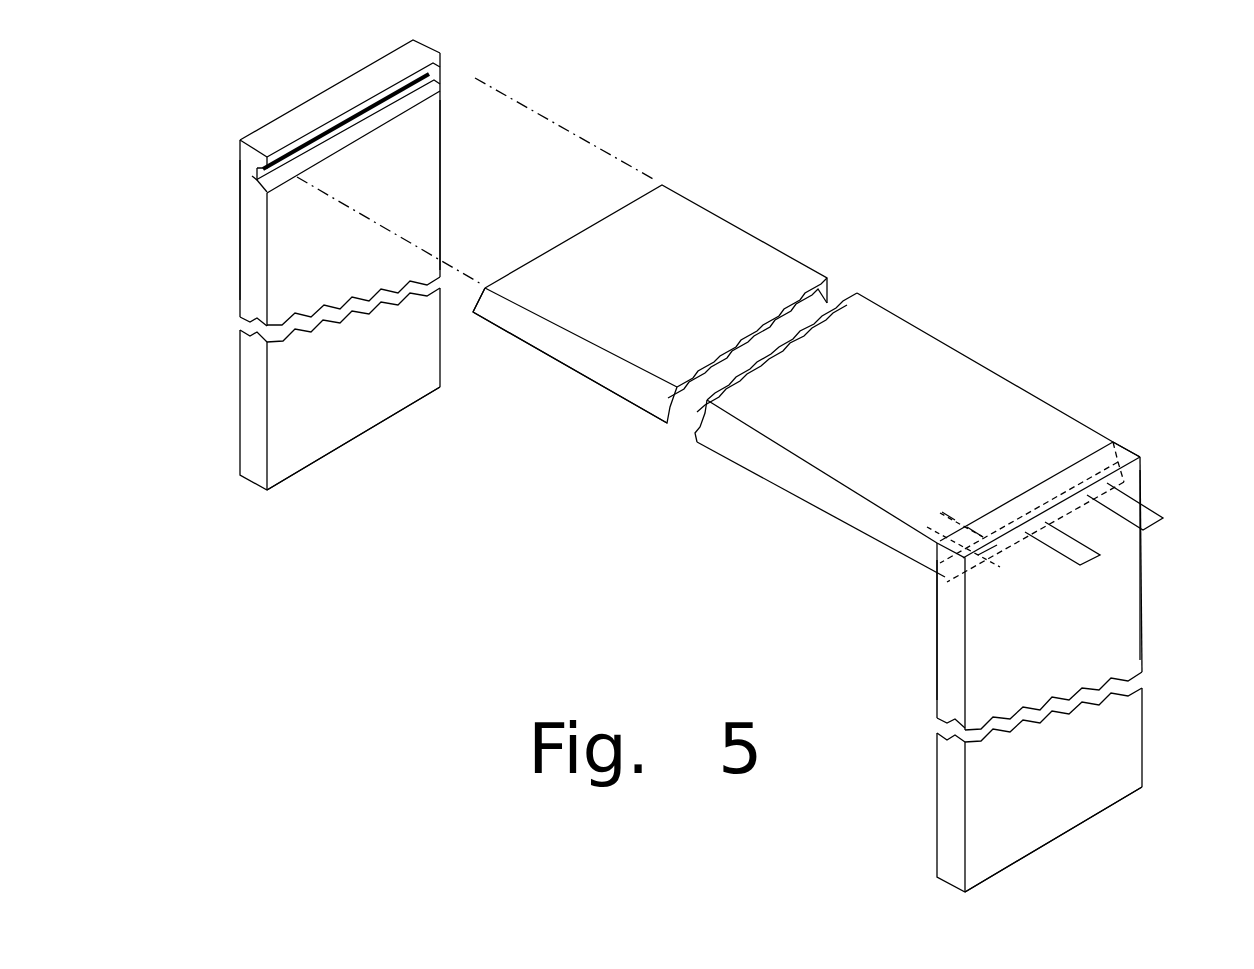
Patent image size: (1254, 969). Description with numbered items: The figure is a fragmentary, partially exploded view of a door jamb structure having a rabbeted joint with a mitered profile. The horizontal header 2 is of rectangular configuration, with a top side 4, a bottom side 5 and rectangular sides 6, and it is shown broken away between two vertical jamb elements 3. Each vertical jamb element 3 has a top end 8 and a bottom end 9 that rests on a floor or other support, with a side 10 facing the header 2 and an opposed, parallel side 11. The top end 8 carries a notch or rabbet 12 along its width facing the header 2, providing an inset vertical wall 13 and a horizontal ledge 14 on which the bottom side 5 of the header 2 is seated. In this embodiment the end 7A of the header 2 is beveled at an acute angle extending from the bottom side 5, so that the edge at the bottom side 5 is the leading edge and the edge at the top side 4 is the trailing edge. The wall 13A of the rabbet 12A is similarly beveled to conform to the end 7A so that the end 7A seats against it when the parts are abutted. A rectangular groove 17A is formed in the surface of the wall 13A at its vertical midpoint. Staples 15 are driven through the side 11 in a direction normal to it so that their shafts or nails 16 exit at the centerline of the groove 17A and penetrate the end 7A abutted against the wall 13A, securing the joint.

The header 2 is at (917, 437).
The vertical jamb element 3 is at (691, 472).
The top side 4 is at (656, 280).
The bottom side 5 is at (575, 355).
The side 6 is at (779, 444).
The end 7A is at (833, 341).
The top end 8 is at (723, 290).
The bottom end 9 is at (729, 639).
The side 10 is at (673, 400).
The side 11 is at (707, 410).
The rabbet 12 is at (384, 102).
The rabbet 12A is at (204, 211).
The inset vertical wall 13 is at (363, 87).
The wall 13A is at (209, 187).
The horizontal ledge 14 is at (461, 171).
The staple 15 is at (1105, 533).
The shaft or nail 16 is at (962, 502).
The groove 17A is at (204, 154).